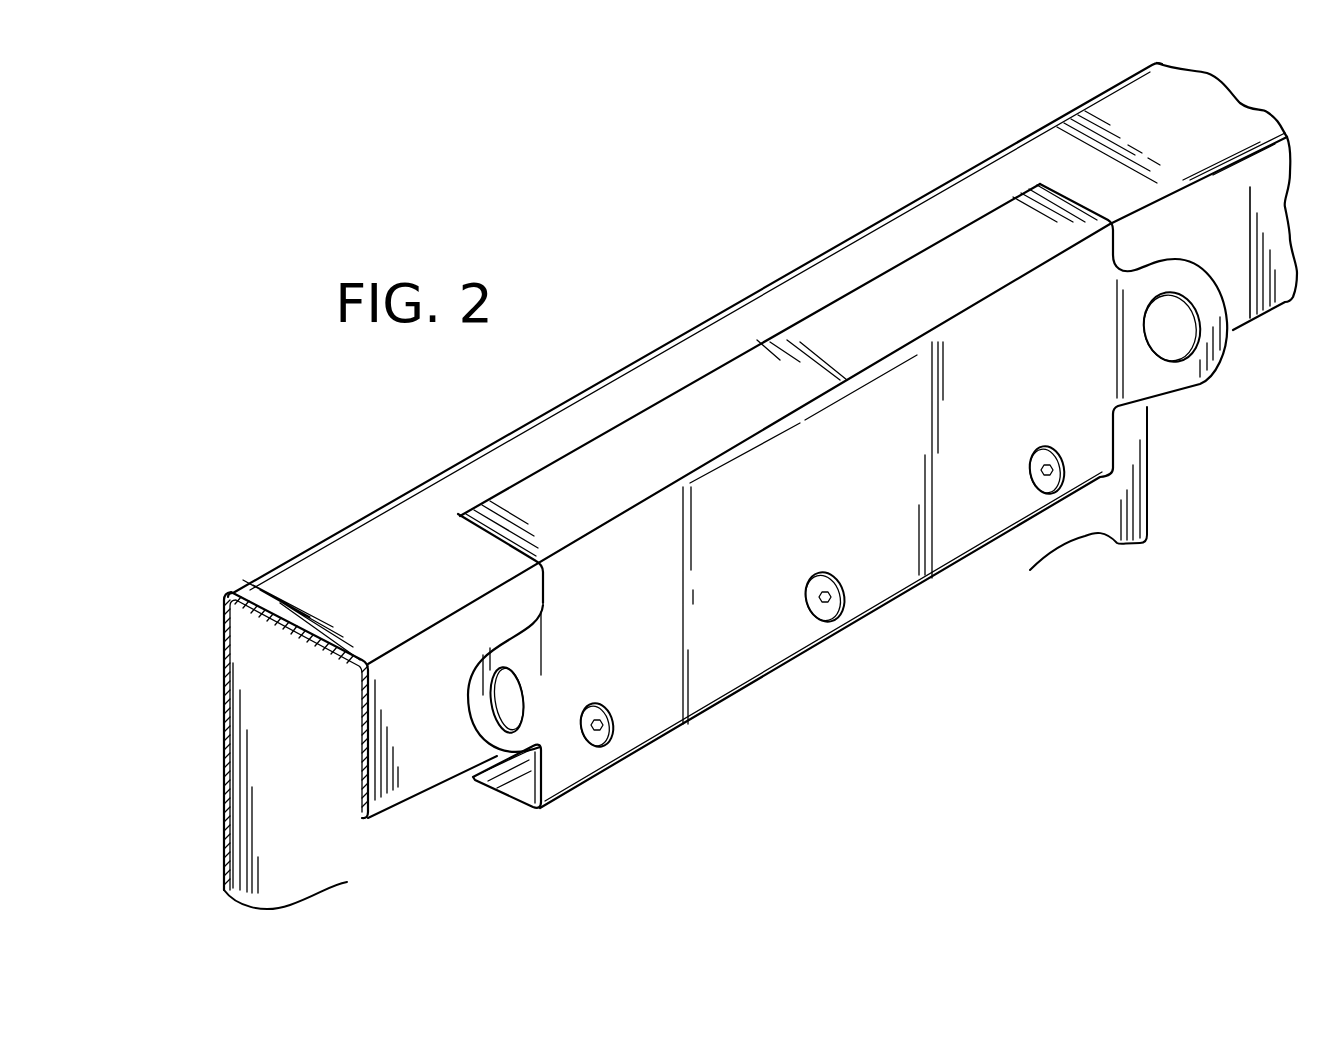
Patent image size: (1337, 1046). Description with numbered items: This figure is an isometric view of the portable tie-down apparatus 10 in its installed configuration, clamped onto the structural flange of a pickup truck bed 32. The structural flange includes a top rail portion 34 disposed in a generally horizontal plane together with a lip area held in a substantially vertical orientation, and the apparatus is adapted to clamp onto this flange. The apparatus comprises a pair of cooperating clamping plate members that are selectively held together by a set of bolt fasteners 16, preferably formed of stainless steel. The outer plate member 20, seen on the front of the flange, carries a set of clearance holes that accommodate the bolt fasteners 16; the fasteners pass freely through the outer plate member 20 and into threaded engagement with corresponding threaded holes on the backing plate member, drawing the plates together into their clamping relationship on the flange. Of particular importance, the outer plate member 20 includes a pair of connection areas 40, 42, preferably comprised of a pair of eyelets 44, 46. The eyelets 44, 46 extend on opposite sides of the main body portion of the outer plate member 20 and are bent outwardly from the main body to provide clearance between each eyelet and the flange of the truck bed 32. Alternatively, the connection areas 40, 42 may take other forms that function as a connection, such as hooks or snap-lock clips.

The portable tie-down apparatus 10 is at (685, 359).
The bolt fasteners 16 is at (1046, 451).
The outer plate member 20 is at (830, 511).
The pickup truck bed 32 is at (575, 809).
The top rail portion 34 is at (358, 539).
The connection area 40 is at (489, 646).
The connection area 42 is at (1173, 264).
The eyelet 44 is at (486, 734).
The eyelet 46 is at (1188, 382).